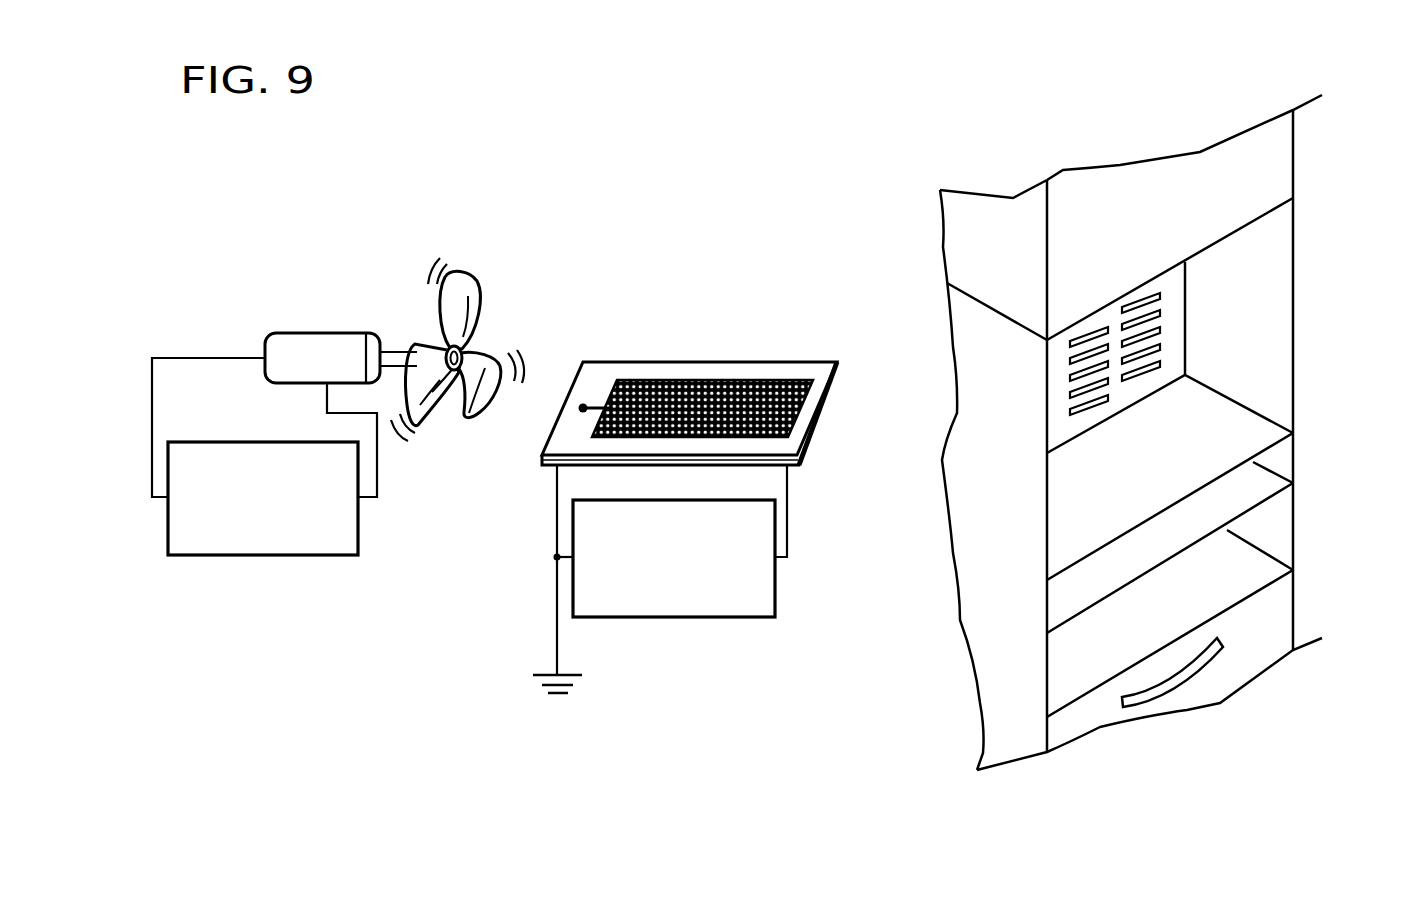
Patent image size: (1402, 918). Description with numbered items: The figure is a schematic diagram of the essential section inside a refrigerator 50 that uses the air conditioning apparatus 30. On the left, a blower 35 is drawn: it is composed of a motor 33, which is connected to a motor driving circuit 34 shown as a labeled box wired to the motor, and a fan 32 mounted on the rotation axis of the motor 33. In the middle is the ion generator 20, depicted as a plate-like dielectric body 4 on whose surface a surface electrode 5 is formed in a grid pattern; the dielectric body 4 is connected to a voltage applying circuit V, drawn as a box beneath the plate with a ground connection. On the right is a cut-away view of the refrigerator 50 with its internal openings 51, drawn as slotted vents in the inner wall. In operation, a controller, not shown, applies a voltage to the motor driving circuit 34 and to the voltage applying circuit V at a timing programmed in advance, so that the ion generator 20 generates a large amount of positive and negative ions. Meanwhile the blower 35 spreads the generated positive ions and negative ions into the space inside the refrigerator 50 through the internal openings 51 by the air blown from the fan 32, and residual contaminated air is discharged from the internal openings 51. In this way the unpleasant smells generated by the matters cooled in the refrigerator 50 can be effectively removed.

The air conditioning apparatus 30 is at (480, 274).
The fan 32 is at (492, 348).
The motor 33 is at (307, 333).
The motor driving circuit 34 is at (235, 557).
The blower 35 is at (252, 610).
The dielectric body 4 is at (808, 408).
The surface electrode 5 is at (693, 380).
The ion generator 20 is at (813, 560).
The voltage applying circuit V is at (673, 617).
The refrigerator 50 is at (1325, 697).
The internal openings 51 is at (1187, 290).